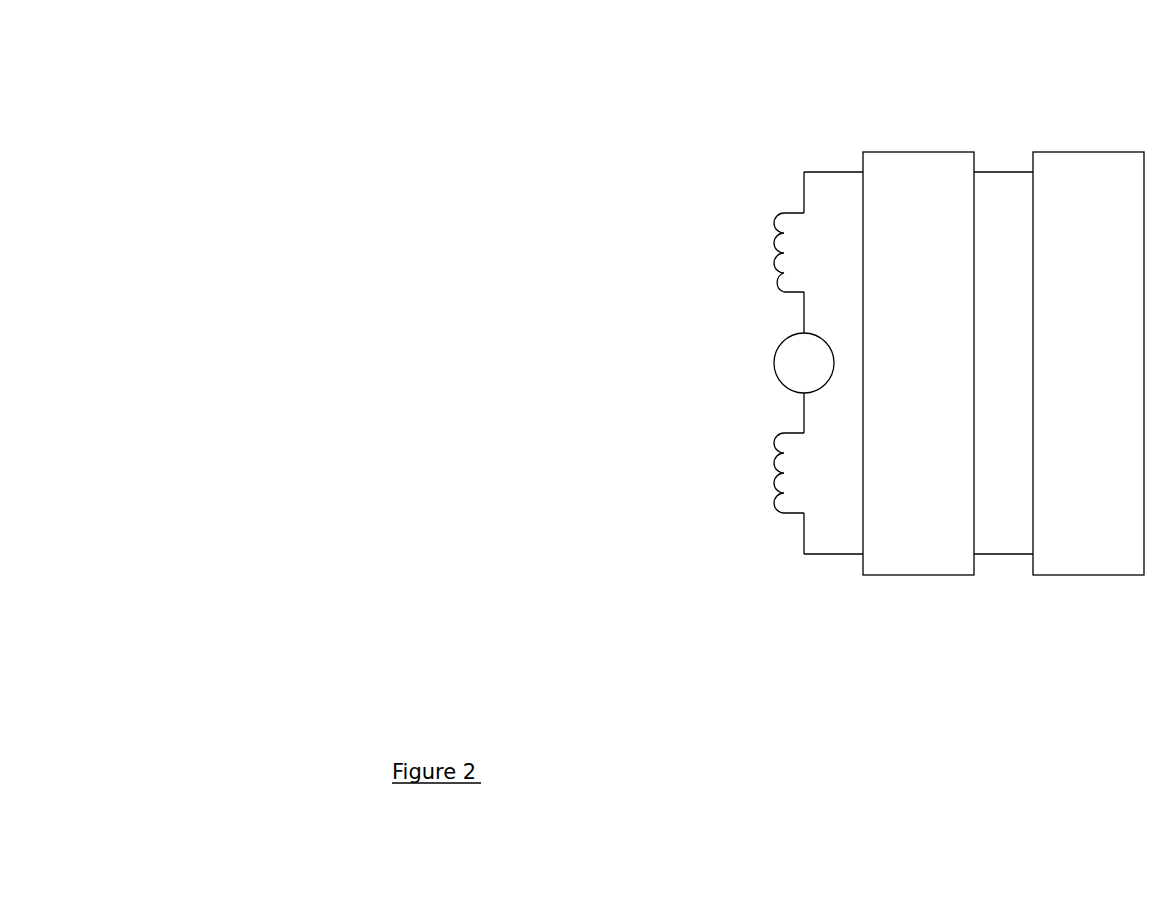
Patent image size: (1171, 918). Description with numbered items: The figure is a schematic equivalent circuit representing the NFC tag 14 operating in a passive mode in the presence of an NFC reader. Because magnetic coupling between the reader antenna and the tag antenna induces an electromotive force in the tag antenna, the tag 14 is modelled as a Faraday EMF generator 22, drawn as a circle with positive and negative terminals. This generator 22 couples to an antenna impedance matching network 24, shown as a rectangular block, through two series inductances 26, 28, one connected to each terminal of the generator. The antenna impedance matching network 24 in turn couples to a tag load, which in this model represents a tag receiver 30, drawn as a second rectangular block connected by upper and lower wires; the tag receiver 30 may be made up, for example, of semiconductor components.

The NFC tag 14 is at (786, 91).
The Faraday EMF generator 22 is at (790, 378).
The antenna impedance matching network 24 is at (891, 570).
The series inductance 26 is at (777, 513).
The series inductance 28 is at (777, 290).
The tag receiver 30 is at (1060, 570).